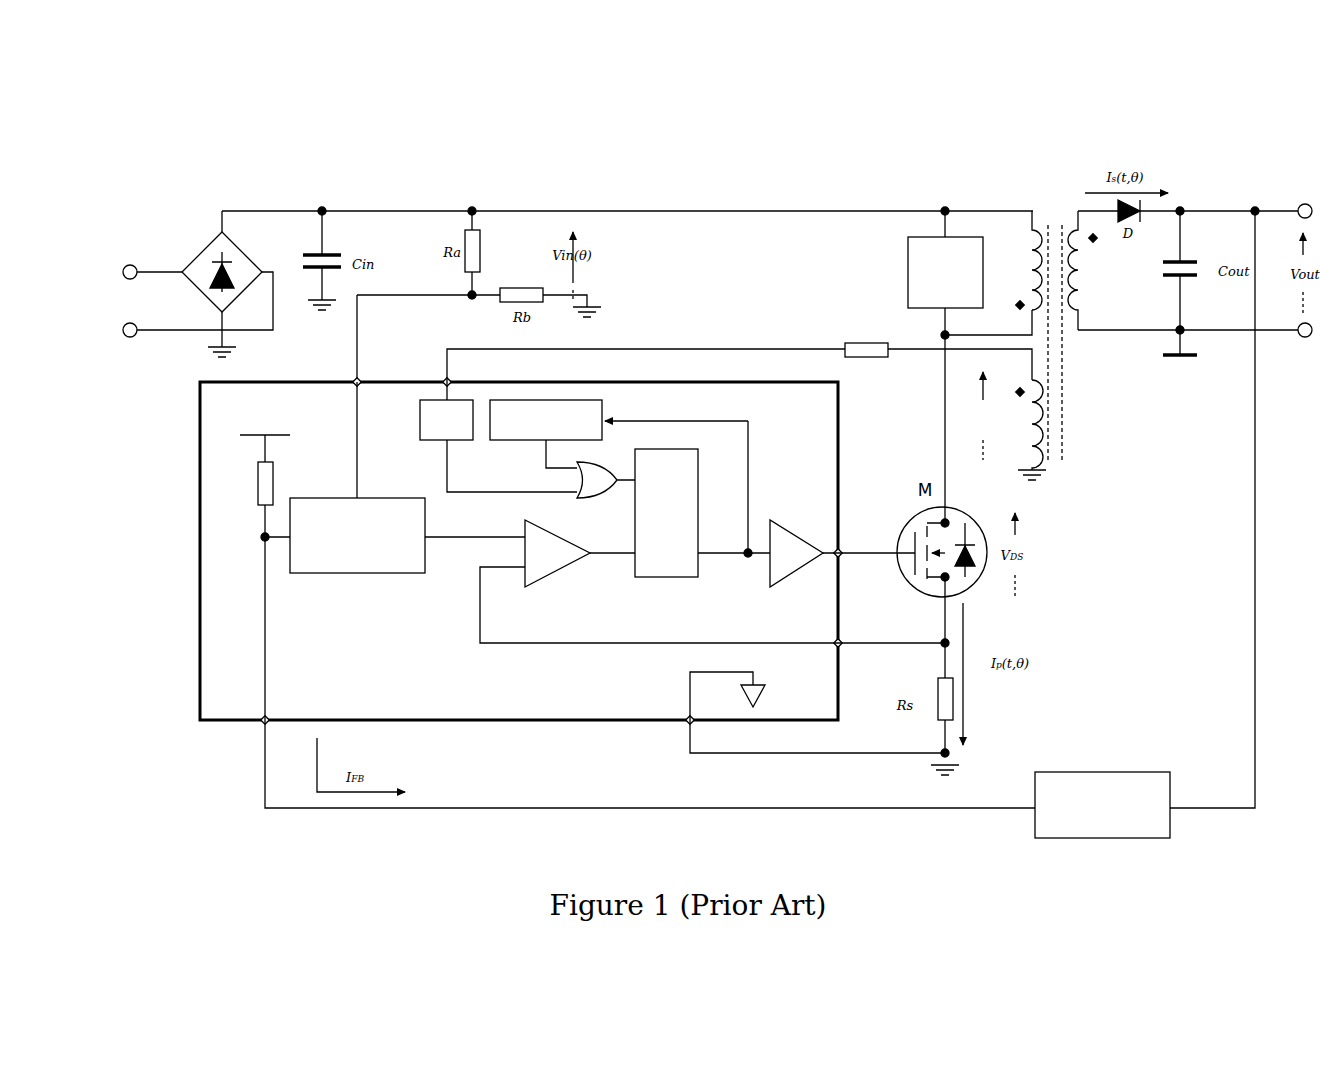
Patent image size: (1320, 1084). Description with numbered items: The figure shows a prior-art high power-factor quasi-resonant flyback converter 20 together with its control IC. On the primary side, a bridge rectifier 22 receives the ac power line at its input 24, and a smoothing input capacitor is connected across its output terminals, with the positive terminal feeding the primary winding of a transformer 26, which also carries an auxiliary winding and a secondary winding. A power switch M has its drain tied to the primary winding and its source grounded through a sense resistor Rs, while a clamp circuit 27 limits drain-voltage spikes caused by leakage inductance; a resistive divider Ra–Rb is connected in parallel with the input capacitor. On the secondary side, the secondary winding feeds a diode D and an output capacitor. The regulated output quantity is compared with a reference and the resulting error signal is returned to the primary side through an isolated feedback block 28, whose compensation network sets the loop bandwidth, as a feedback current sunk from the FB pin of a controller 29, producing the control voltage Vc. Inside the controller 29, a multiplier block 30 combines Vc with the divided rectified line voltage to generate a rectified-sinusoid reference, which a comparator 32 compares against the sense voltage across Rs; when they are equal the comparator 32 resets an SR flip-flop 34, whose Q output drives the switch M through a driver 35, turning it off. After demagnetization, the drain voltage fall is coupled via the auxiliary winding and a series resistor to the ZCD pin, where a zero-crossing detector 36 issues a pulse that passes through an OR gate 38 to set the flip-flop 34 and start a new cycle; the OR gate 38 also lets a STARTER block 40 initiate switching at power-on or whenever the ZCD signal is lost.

The Hi-PF QR flyback converter 20 is at (733, 170).
The bridge rectifier 22 is at (193, 260).
The input 24 is at (130, 333).
The transformer 26 is at (1077, 312).
The clamp circuit 27 is at (965, 237).
The isolated feedback block 28 is at (1115, 772).
The controller 29 is at (200, 620).
The multiplier block 30 is at (368, 573).
The comparator 32 is at (562, 567).
The SR flip-flop 34 is at (655, 577).
The driver 35 is at (799, 538).
The zero-crossing detector (ZCD) 36 is at (463, 400).
The OR gate 38 is at (608, 531).
The STARTER block 40 is at (583, 398).